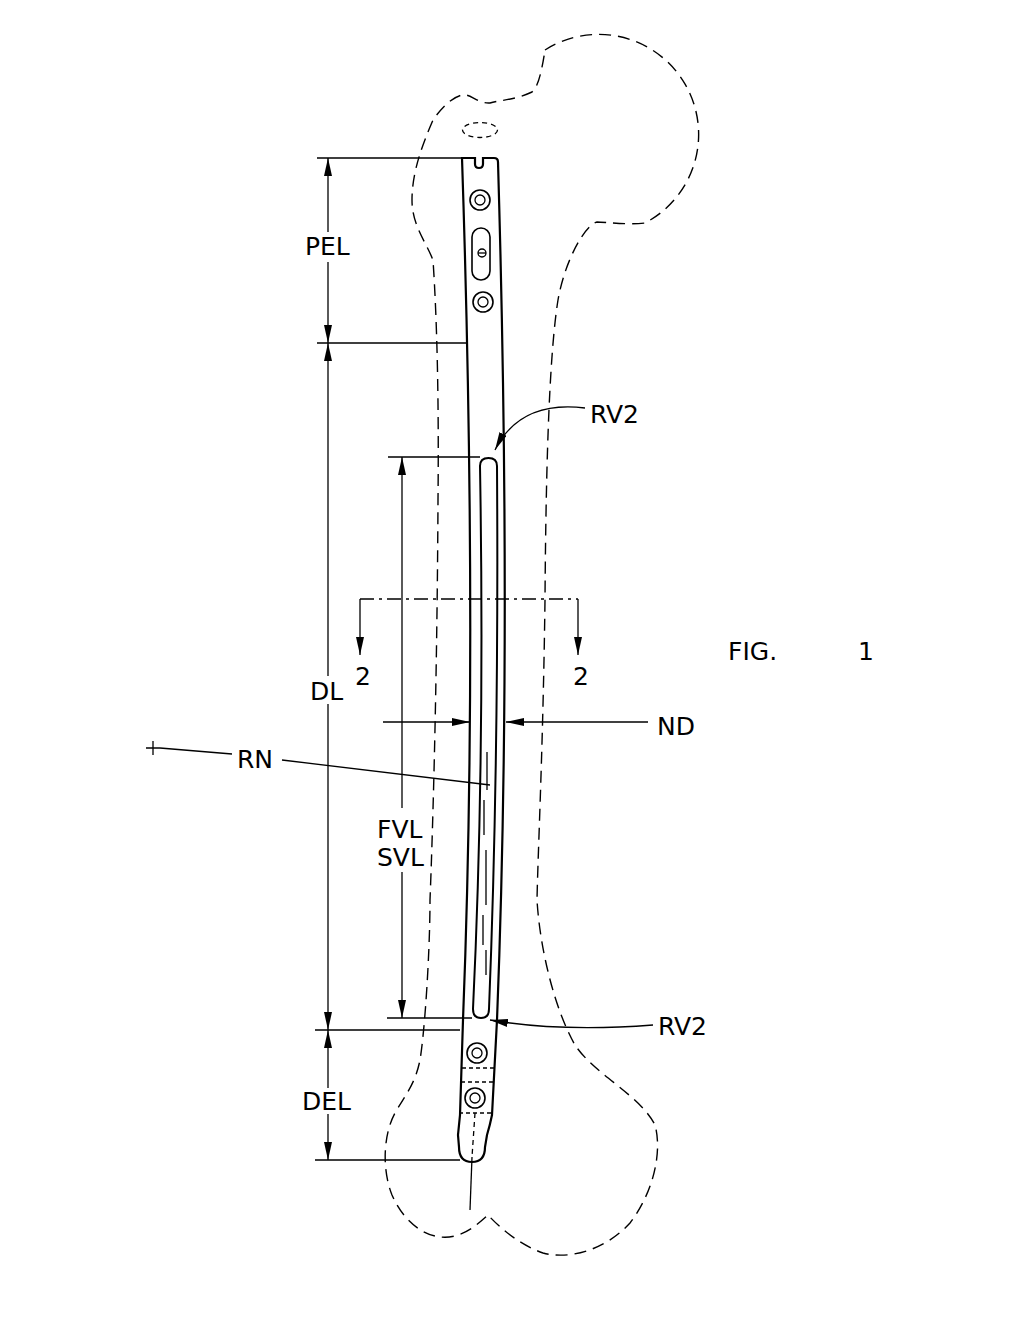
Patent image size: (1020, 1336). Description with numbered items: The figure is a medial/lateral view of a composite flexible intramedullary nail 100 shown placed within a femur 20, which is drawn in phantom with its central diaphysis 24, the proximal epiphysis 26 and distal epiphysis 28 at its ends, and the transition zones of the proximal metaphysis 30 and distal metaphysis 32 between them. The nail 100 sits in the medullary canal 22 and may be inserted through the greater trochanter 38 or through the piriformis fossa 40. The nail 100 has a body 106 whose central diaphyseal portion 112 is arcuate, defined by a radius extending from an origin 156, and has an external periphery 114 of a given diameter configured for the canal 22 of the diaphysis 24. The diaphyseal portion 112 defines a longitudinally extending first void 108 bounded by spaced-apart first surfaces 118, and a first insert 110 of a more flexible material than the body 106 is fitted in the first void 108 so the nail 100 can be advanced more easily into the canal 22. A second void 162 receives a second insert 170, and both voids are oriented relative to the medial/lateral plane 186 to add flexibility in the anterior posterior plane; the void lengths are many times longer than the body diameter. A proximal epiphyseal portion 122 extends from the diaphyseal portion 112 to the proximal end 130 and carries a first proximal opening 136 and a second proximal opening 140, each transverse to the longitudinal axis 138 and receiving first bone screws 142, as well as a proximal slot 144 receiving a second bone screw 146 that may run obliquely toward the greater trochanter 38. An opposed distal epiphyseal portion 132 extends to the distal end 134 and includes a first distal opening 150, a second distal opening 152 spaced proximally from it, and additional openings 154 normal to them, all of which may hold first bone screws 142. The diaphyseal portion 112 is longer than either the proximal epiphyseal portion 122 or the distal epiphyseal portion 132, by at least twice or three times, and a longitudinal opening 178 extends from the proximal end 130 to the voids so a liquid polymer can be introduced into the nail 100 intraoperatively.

The composite flexible intramedullary nail 100 is at (288, 85).
The proximal epiphysis 26 is at (168, 63).
The proximal metaphysis 30 is at (168, 253).
The diaphysis 24 is at (168, 298).
The distal metaphysis 32 is at (168, 977).
The distal epiphysis 28 is at (168, 1048).
The greater trochanter 38 is at (400, 200).
The longitudinal opening 178 is at (465, 142).
The piriformis fossa 40 is at (483, 125).
The proximal end 130 is at (478, 158).
The first proximal opening 136 is at (505, 202).
The first bone screws 142 is at (487, 203).
The second proximal opening 140 is at (514, 303).
The proximal slot 144 is at (470, 272).
The second bone screw 146 is at (478, 253).
The proximal epiphyseal portion 122 is at (295, 312).
The femur 20 is at (549, 372).
The medullary canal 22 is at (524, 483).
The longitudinally extending first surface 118 is at (496, 546).
The diaphyseal portion 112 is at (282, 675).
The external periphery 114 is at (507, 692).
The body 106 is at (506, 767).
The first void 108 is at (490, 838).
The first insert 110 is at (495, 875).
The medial/lateral plane 186 is at (487, 885).
The second insert 170 is at (503, 911).
The second void 162 is at (483, 920).
The origin 156 is at (162, 746).
The distal epiphyseal portion 132 is at (283, 1073).
The second distal opening 152 is at (508, 1050).
The additional openings 154 is at (502, 1075).
The first distal opening 150 is at (500, 1125).
The distal end 134 is at (478, 1163).
The longitudinal axis 138 is at (470, 1193).